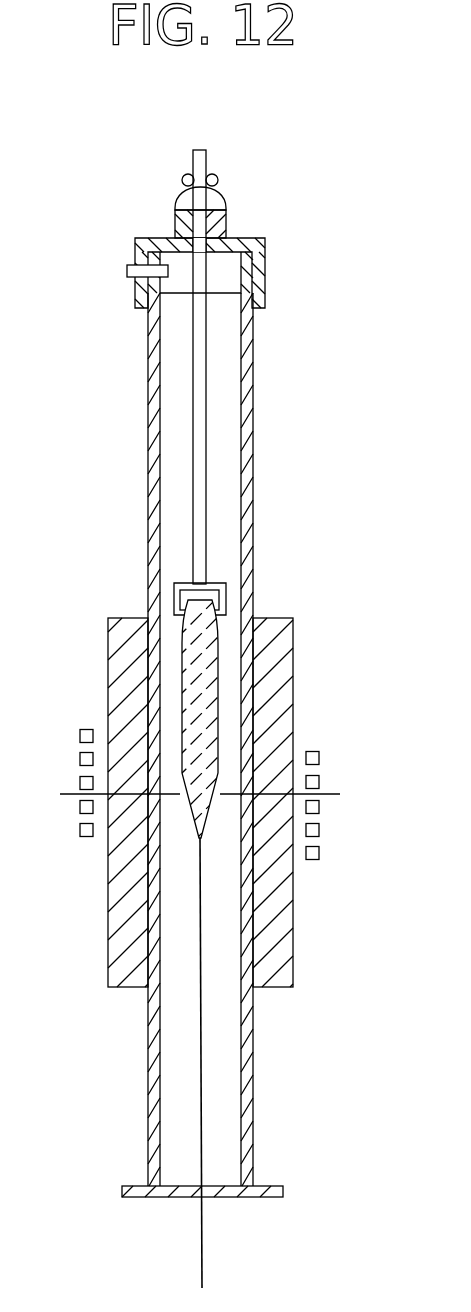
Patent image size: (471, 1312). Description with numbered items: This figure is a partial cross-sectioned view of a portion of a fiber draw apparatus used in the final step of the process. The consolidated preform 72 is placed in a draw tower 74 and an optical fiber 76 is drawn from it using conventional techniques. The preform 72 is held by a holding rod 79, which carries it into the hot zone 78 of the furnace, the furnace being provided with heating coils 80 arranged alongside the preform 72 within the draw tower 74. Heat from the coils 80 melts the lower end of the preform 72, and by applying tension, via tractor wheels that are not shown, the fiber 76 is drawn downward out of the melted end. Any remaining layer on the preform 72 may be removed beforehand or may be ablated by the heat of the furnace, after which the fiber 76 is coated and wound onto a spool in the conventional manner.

The consolidated preform 72 is at (218, 675).
The draw tower 74 is at (253, 491).
The optical fiber 76 is at (204, 1240).
The hot zone 78 is at (62, 722).
The holding rod 79 is at (227, 599).
The heating coils 80 is at (320, 757).